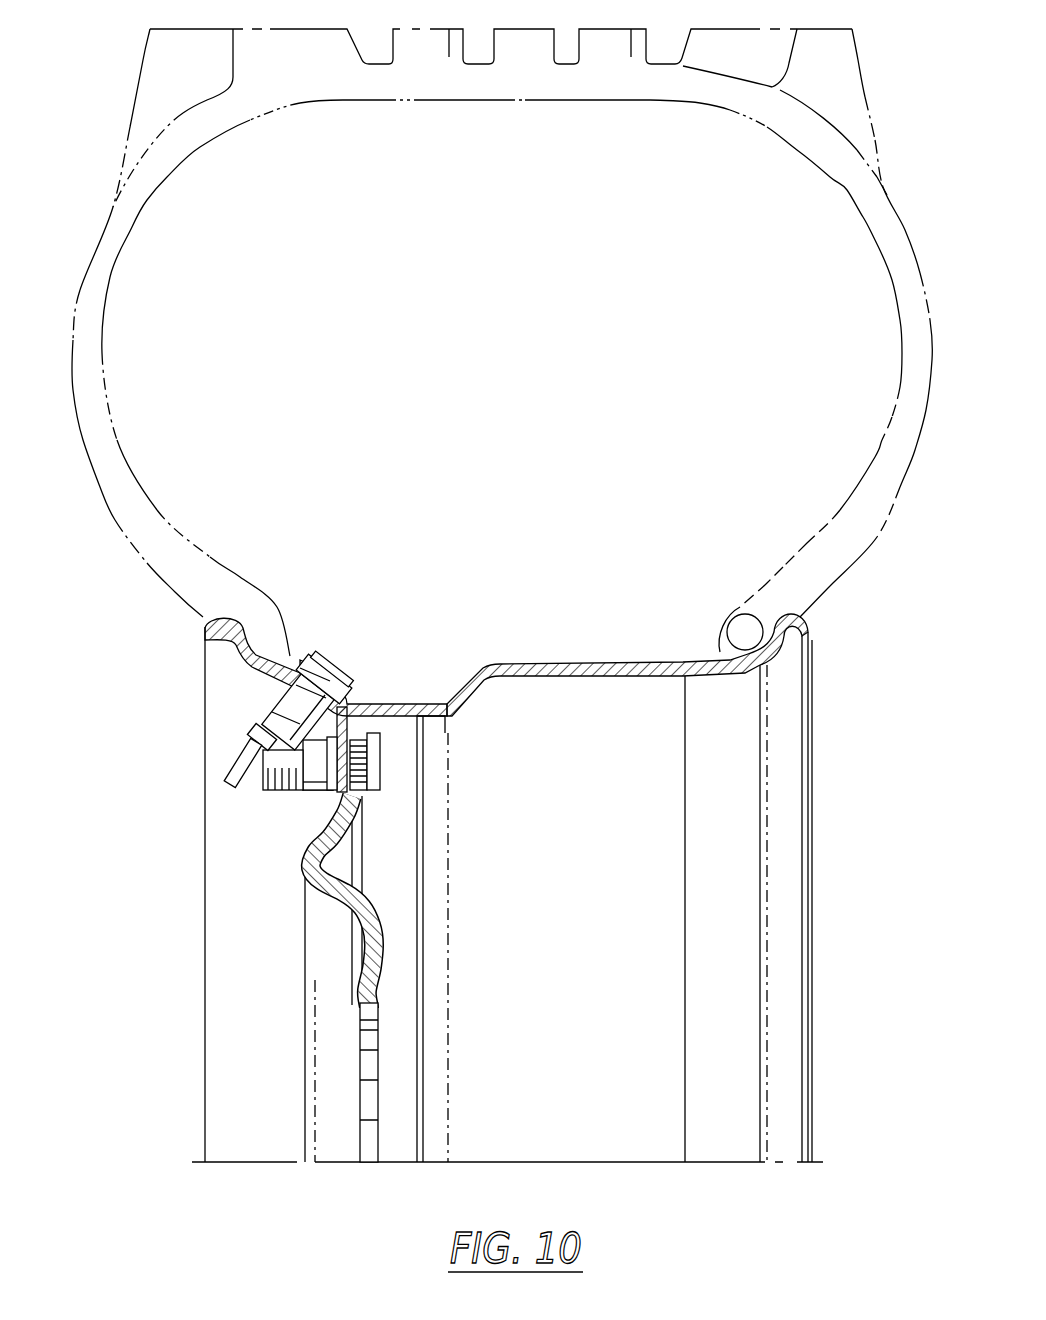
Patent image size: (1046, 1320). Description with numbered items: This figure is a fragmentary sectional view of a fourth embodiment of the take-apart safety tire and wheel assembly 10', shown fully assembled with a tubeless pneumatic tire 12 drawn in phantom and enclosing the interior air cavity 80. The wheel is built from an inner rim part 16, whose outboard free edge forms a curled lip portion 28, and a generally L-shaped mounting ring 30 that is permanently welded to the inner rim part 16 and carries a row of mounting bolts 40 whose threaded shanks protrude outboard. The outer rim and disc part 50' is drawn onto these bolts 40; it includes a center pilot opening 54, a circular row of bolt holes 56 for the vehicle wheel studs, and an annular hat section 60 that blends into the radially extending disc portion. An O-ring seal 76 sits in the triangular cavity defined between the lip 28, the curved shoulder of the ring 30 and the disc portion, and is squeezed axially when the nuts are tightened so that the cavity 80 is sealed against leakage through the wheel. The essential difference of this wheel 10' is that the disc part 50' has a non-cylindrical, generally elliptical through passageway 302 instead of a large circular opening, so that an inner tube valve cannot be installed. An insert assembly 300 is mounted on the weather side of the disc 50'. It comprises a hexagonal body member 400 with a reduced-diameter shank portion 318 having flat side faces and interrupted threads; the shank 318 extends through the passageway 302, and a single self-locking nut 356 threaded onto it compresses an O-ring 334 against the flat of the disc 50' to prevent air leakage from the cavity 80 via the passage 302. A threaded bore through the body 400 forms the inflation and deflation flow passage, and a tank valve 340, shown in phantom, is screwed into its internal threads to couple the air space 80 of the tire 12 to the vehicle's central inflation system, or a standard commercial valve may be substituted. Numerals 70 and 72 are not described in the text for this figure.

The tubeless pneumatic tire 12 is at (78, 298).
The interior air cavity 80 is at (500, 211).
The take-apart safety tire and wheel assembly 10' is at (157, 868).
The rim flange hump 70 is at (227, 620).
The bead seat 72 is at (284, 656).
The self-locking nut 356 is at (323, 635).
The shank portion 318 is at (337, 650).
The O-ring seal 76 is at (357, 707).
The lip portion 28 is at (380, 697).
The mounting ring 30 is at (426, 749).
The mounting bolt 40 is at (380, 777).
The through passageway 302 is at (300, 672).
The O-ring 334 is at (290, 693).
The insert assembly 300 is at (259, 708).
The body member 400 is at (262, 722).
The tank valve 340 is at (234, 749).
The disc part 50' is at (474, 1000).
The hat section 60 is at (305, 860).
The bolt holes 56 is at (360, 958).
The center pilot opening 54 is at (377, 1050).
The inner rim part 16 is at (815, 737).